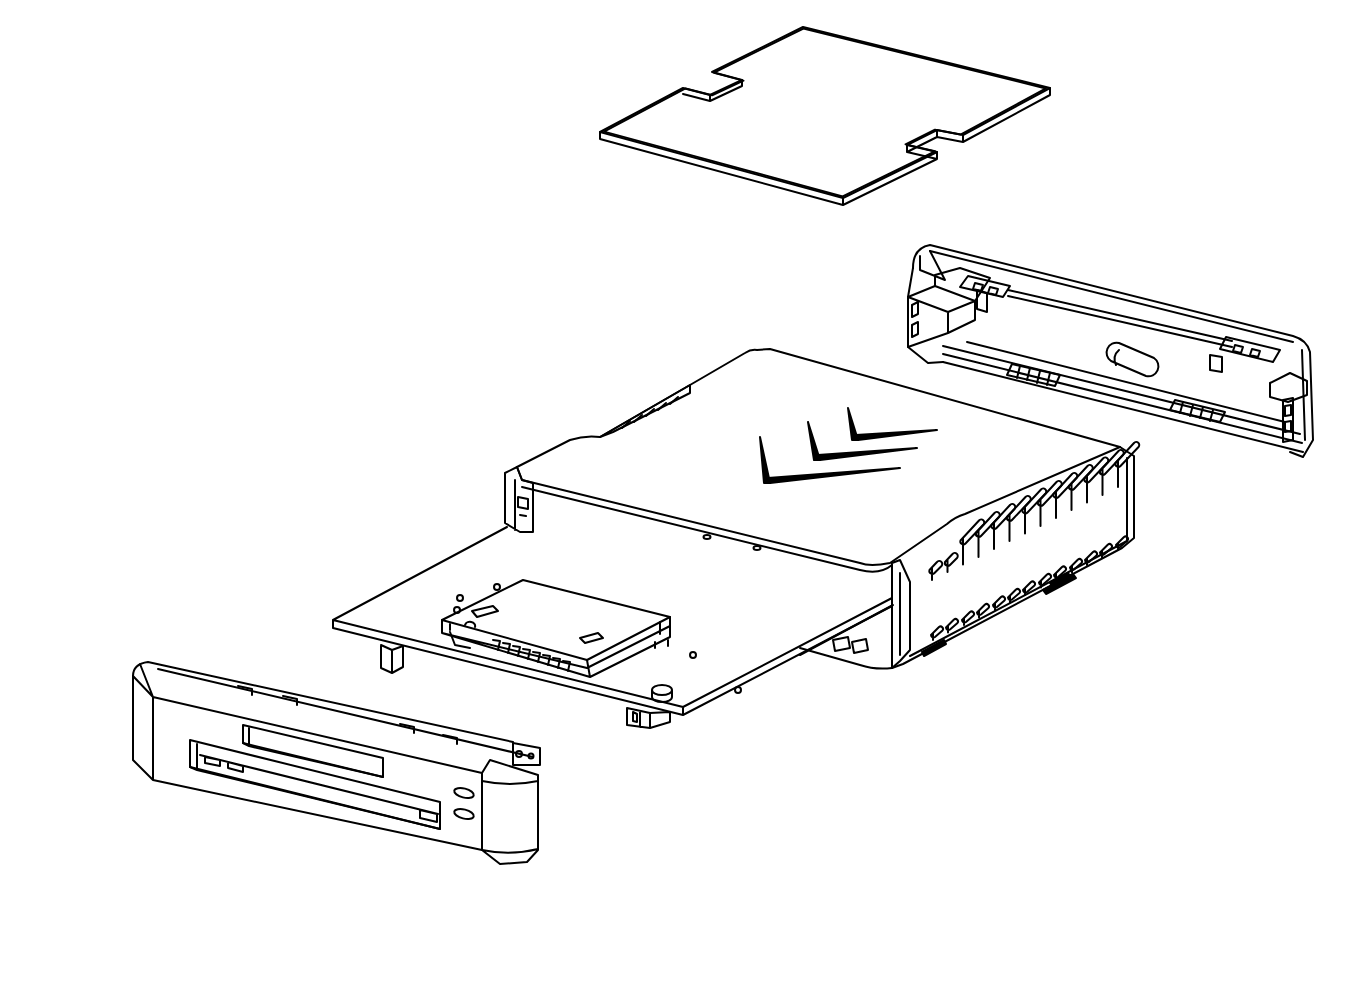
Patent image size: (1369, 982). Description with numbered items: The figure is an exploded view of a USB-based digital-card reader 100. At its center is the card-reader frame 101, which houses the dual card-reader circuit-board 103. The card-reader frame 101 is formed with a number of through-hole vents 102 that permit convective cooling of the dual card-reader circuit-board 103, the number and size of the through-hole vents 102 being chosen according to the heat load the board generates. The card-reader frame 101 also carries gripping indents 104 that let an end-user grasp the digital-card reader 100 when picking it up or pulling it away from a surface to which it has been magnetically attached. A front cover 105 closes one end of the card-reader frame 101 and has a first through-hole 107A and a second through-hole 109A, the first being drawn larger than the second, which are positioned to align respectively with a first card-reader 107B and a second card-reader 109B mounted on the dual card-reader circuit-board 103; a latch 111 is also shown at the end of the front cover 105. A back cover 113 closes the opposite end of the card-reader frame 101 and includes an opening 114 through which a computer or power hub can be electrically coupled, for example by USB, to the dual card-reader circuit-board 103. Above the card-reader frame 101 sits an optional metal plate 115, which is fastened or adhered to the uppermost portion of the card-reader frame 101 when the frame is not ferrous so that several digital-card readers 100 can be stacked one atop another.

The USB-based digital-card reader 100 is at (418, 119).
The card-reader frame 101 is at (920, 660).
The through-hole vents 102 is at (972, 512).
The dual card-reader circuit-board 103 is at (729, 698).
The gripping indents 104 is at (648, 401).
The front cover 105 is at (250, 803).
The first through-hole 107A is at (392, 812).
The first card-reader 107B is at (602, 716).
The second through-hole 109A is at (262, 741).
The second card-reader 109B is at (475, 645).
The latch 111 is at (523, 740).
The back cover 113 is at (1053, 280).
The opening 114 is at (1136, 352).
The metal plate 115 is at (905, 70).